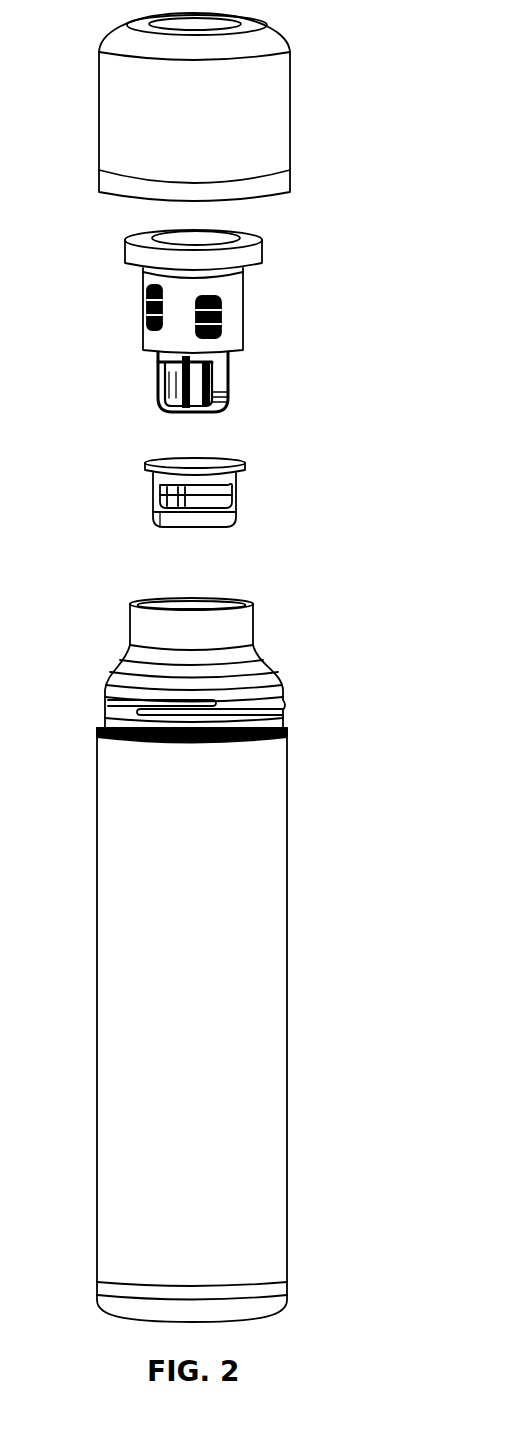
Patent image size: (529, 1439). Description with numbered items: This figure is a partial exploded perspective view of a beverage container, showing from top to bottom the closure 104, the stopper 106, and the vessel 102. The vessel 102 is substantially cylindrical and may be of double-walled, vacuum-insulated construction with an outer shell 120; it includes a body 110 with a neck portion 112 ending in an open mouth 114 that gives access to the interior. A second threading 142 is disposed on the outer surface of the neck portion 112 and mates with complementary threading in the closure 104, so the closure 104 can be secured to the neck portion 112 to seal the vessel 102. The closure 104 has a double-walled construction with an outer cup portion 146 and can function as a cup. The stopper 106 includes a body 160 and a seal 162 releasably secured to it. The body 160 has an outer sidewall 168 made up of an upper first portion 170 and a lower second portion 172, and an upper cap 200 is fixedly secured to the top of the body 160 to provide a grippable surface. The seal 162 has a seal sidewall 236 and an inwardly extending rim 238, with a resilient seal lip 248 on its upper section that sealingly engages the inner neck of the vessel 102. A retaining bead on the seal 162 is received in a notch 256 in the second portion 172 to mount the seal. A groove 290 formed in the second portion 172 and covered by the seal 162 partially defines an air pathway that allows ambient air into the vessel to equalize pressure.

The vessel 102 is at (198, 944).
The closure 104 is at (236, 107).
The stopper 106 is at (232, 387).
The body 110 is at (230, 1025).
The neck portion 112 is at (196, 680).
The mouth 114 is at (140, 602).
The outer shell 120 is at (262, 1025).
The second threading 142 is at (108, 700).
The outer cup portion 146 is at (273, 82).
The body 160 is at (188, 320).
The seal 162 is at (192, 507).
The outer sidewall 168 is at (143, 285).
The first portion 170 is at (143, 335).
The second portion 172 is at (207, 387).
The upper cap 200 is at (127, 248).
The seal sidewall 236 is at (225, 513).
The rim 238 is at (197, 518).
The seal lip 248 is at (145, 472).
The notch 256 is at (228, 400).
The groove 290 is at (160, 386).